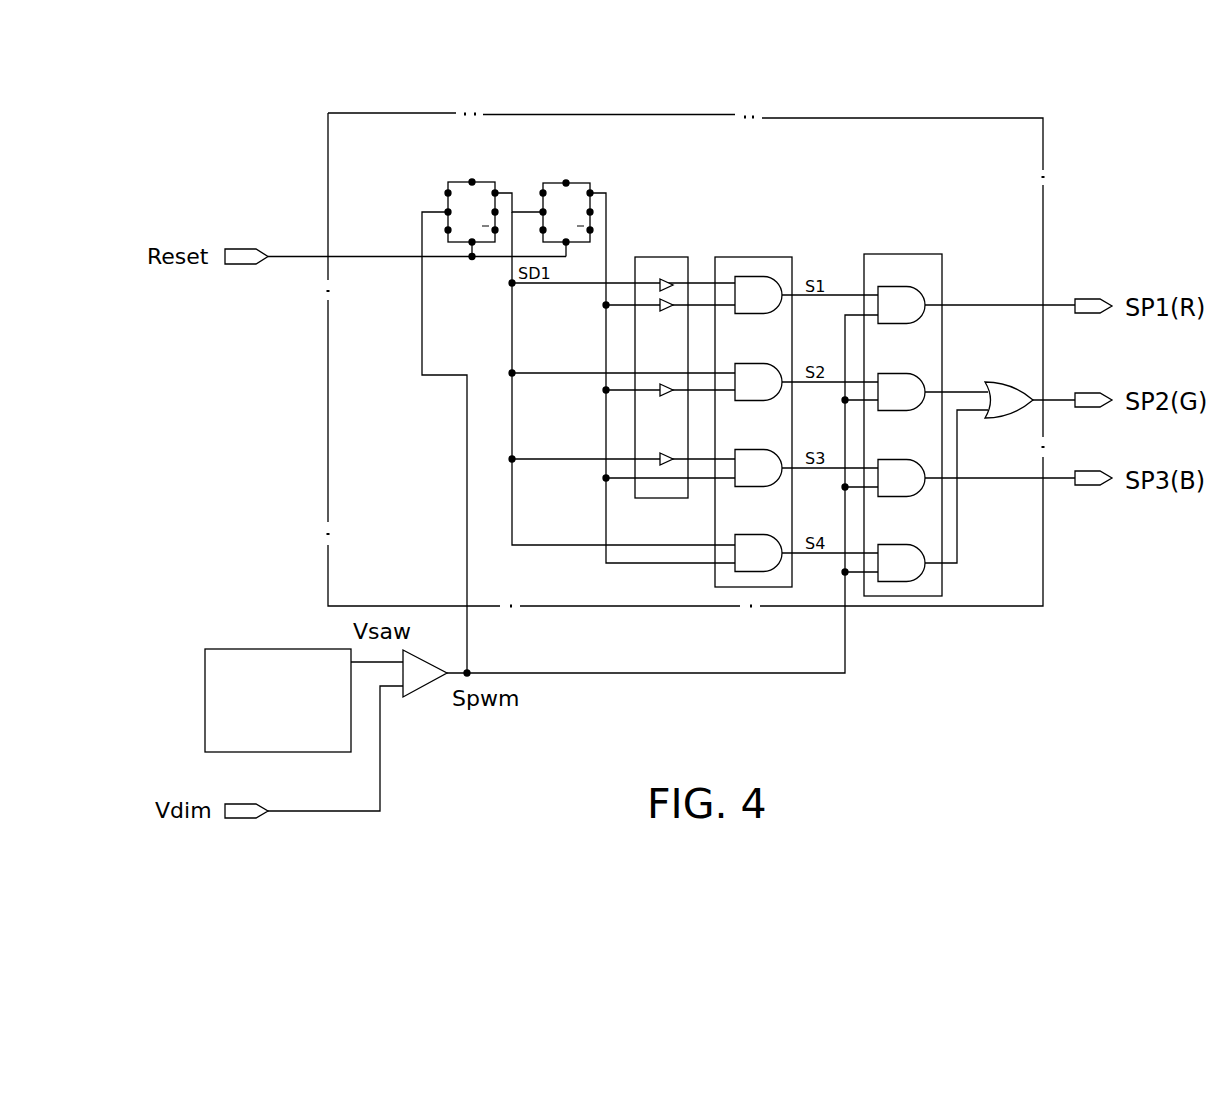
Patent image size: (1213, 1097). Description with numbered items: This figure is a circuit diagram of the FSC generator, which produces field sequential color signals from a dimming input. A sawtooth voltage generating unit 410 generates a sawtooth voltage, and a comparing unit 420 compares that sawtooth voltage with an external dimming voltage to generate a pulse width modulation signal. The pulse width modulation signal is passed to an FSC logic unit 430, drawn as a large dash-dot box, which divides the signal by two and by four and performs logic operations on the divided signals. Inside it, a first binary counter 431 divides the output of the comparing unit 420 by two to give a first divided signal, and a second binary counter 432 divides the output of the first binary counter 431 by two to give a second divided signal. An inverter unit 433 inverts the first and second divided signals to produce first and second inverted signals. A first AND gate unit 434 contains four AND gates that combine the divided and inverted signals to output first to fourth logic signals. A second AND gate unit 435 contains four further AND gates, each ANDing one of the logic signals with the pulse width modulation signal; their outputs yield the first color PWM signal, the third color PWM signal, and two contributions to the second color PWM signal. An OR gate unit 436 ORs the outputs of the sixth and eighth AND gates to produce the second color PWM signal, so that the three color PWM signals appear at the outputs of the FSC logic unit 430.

The sawtooth voltage generating unit 410 is at (240, 648).
The comparing unit 420 is at (425, 688).
The FSC logic unit 430 is at (950, 119).
The first binary counter 431 is at (446, 192).
The second binary counter 432 is at (567, 183).
The inverter unit 433 is at (666, 250).
The first AND gate unit 434 is at (768, 250).
The second AND gate unit 435 is at (916, 250).
The OR gate unit 436 is at (1004, 380).